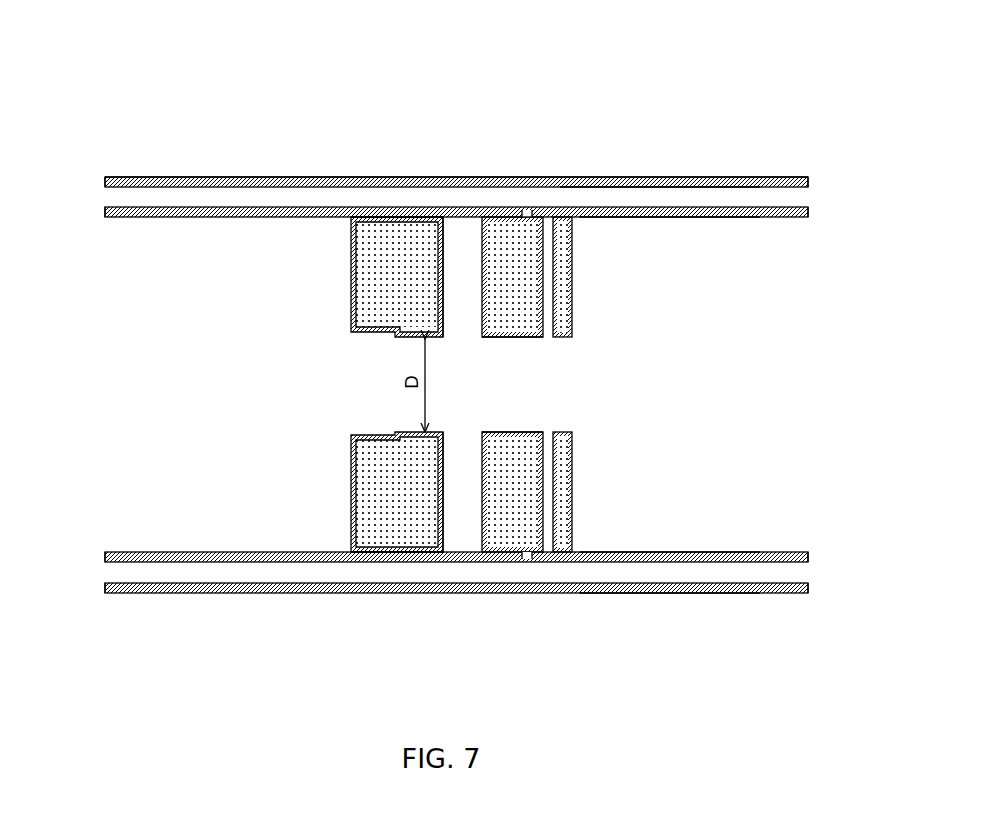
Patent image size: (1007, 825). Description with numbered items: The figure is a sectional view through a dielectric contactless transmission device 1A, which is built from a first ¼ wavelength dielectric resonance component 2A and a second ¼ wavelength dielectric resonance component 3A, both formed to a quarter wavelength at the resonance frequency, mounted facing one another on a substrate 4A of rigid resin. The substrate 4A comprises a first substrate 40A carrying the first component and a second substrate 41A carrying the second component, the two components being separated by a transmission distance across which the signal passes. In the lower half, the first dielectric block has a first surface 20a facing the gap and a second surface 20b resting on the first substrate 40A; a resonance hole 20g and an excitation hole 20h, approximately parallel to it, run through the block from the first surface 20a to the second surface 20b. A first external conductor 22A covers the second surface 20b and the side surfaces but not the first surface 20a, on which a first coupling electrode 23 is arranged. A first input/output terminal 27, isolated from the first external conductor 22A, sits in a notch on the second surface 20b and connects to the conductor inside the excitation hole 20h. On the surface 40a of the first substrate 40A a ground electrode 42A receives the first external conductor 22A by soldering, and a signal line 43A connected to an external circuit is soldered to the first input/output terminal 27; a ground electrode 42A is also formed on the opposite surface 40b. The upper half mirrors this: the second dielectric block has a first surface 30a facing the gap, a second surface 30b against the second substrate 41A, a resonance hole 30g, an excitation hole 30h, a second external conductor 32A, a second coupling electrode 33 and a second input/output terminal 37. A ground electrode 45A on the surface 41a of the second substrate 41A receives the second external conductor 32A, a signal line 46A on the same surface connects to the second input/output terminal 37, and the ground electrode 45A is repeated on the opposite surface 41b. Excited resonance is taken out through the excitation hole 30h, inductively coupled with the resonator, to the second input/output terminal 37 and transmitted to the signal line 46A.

The dielectric contactless transmission device 1A is at (733, 96).
The first ¼ wavelength dielectric resonance component 2A is at (302, 499).
The second ¼ wavelength dielectric resonance component 3A is at (302, 292).
The substrate 4A is at (253, 172).
The first surface 20a is at (370, 432).
The second surface 20b is at (374, 560).
The resonance hole 20g is at (457, 470).
The excitation hole 20h is at (551, 473).
The first external conductor 22A is at (501, 552).
The first coupling electrode 23 is at (508, 432).
The first input/output terminal 27 is at (563, 560).
The first surface 30a is at (362, 337).
The second surface 30b is at (373, 217).
The resonance hole 30g is at (459, 314).
The excitation hole 30h is at (551, 344).
The second external conductor 32A is at (500, 217).
The second coupling electrode 33 is at (502, 337).
The second input/output terminal 37 is at (566, 217).
The first substrate 40A is at (222, 565).
The surface 40a is at (632, 555).
The surface 40b is at (597, 580).
The second substrate 41A is at (185, 198).
The surface 41a is at (692, 207).
The surface 41b is at (647, 186).
The ground electrode 42A is at (134, 552).
The signal line 43A is at (728, 552).
The ground electrode 45A is at (107, 177).
The signal line 46A is at (778, 217).